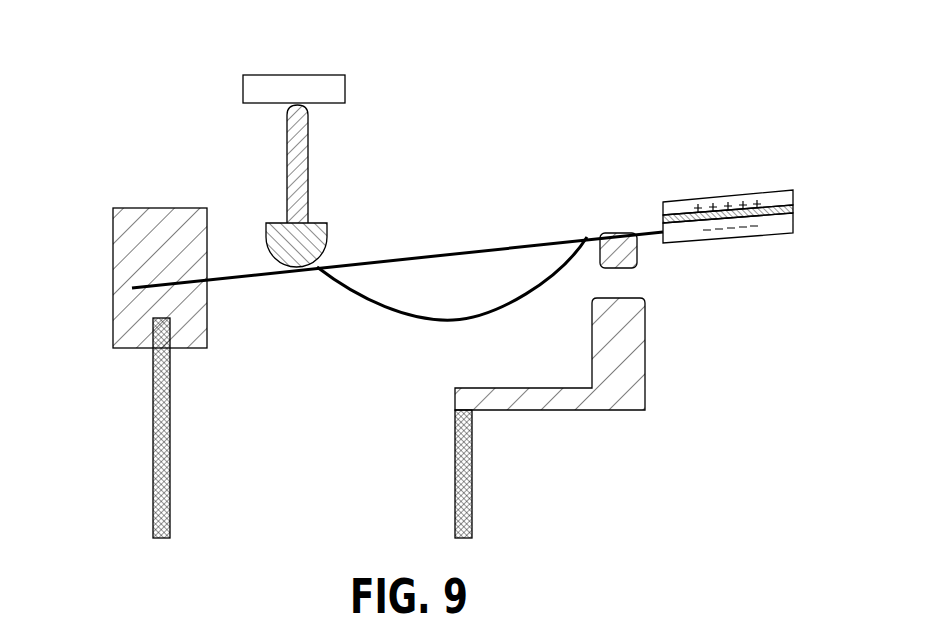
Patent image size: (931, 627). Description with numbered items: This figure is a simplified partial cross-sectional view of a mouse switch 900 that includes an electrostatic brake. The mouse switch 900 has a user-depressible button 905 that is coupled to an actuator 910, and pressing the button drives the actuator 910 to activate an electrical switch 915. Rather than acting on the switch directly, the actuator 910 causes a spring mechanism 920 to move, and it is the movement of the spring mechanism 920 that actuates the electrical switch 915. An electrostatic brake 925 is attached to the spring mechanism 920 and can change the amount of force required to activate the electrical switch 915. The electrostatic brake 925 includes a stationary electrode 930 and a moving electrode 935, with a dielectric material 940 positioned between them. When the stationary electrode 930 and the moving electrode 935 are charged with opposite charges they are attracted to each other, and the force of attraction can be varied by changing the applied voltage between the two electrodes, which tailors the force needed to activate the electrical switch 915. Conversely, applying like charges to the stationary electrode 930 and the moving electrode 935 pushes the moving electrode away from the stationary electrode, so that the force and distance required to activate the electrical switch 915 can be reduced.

The mouse switch 900 is at (142, 66).
The user-depressible button 905 is at (293, 74).
The actuator 910 is at (305, 193).
The electrical switch 915 is at (613, 182).
The spring mechanism 920 is at (417, 253).
The electrostatic brake 925 is at (765, 167).
The stationary electrode 930 is at (777, 198).
The moving electrode 935 is at (790, 222).
The dielectric material 940 is at (793, 212).